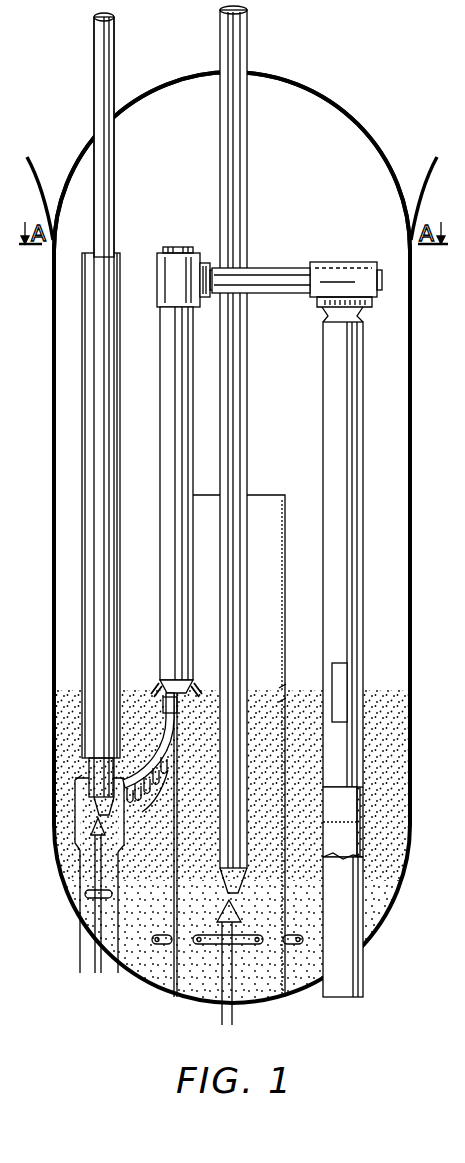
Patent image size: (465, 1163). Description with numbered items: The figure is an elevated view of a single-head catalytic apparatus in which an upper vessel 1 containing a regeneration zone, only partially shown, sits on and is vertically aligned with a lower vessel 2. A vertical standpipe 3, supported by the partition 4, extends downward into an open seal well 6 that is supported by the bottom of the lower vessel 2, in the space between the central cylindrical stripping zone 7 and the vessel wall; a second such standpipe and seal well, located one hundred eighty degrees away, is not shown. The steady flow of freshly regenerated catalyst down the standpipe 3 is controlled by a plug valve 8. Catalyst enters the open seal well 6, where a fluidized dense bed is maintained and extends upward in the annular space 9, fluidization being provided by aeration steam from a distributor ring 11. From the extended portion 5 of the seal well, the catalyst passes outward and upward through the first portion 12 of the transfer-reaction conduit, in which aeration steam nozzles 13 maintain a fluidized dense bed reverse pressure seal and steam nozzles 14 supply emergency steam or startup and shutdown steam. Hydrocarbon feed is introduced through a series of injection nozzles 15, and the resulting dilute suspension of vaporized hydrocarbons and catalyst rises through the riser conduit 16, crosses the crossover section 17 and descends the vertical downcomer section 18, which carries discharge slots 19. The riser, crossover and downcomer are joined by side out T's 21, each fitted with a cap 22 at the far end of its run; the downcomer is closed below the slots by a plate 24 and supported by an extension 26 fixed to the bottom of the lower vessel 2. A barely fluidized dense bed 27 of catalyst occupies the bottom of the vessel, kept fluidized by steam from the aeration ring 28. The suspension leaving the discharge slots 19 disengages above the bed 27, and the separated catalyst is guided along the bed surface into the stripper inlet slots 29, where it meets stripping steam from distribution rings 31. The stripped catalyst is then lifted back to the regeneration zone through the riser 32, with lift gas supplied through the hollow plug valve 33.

The upper vessel 1 is at (36, 186).
The lower vessel 2 is at (414, 531).
The vertical standpipe 3 is at (116, 143).
The partition 4 is at (173, 82).
The extended portion of the open seal well 5 is at (73, 822).
The open seal well 6 is at (82, 407).
The central cylindrical stripping zone 7 is at (287, 512).
The plug valve 8 is at (95, 958).
The annular space 9 is at (88, 466).
The distributor ring 11 is at (112, 895).
The first portion of the transfer-reaction conduit 12 is at (150, 768).
The aeration steam nozzle 13 is at (146, 820).
The steam nozzle 14 is at (178, 790).
The injection nozzle 15 is at (156, 687).
The riser conduit 16 is at (160, 392).
The crossover section 17 is at (270, 266).
The vertical downcomer section 18 is at (363, 422).
The discharge slot 19 is at (340, 680).
The side out T 21 is at (178, 283).
The cap 22 is at (176, 246).
The plate 24 is at (345, 822).
The extension 26 is at (360, 890).
The dense bed 27 is at (311, 769).
The aeration ring 28 is at (295, 946).
The stripper inlet slot 29 is at (283, 690).
The distribution ring 31 is at (250, 946).
The riser 32 is at (237, 537).
The hollow plug valve 33 is at (220, 1012).